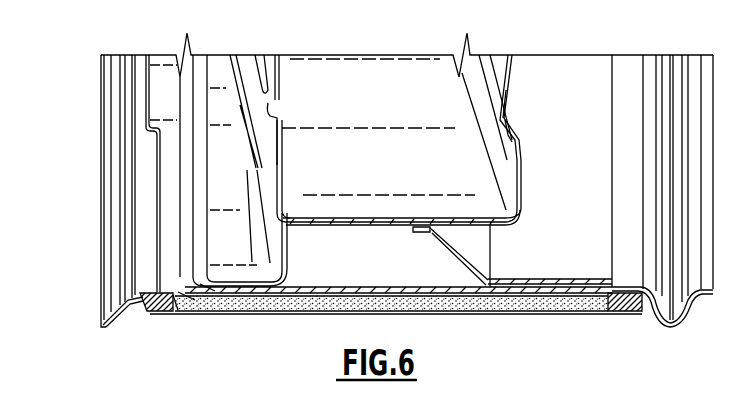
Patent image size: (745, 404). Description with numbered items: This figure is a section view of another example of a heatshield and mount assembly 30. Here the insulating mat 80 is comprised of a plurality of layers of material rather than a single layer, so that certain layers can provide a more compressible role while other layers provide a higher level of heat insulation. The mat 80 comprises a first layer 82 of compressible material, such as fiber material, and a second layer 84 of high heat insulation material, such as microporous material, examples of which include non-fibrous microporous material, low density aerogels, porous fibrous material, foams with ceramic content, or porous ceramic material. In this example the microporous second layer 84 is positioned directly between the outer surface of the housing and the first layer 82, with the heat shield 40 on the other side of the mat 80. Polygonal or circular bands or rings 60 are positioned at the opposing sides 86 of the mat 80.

The tub assembly 30 is at (407, 177).
The heat shield 40 is at (149, 317).
The bands or rings 60 is at (103, 317).
The mat 80 is at (305, 288).
The first layer 82 is at (192, 299).
The second layer 84 is at (214, 291).
The opposing sides 86 is at (176, 306).